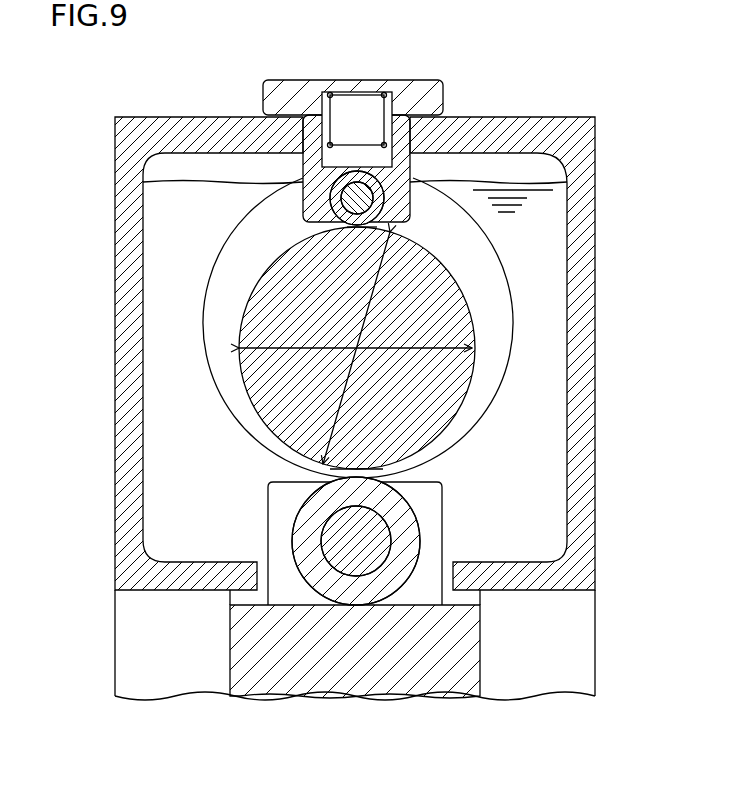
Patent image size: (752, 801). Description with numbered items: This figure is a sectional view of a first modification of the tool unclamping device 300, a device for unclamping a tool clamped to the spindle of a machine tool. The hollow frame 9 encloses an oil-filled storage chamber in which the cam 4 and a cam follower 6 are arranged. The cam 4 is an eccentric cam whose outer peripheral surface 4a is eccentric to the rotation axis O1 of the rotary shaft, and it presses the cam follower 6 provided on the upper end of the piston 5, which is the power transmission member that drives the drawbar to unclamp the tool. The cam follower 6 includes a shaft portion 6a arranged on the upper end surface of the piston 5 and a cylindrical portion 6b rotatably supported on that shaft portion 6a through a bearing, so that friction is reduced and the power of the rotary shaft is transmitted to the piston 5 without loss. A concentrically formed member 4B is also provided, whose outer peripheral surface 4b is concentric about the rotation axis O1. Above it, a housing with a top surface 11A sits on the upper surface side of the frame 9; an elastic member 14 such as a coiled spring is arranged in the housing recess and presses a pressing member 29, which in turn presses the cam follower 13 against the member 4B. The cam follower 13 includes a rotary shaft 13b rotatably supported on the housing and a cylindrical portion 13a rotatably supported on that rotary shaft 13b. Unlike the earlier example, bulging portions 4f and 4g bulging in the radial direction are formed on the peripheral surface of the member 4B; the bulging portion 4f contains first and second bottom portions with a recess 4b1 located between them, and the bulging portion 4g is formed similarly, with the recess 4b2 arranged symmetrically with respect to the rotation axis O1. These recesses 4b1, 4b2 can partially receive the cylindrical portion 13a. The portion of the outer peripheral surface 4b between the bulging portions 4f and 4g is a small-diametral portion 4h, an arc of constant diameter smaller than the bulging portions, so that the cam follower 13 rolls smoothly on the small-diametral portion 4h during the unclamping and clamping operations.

The tool unclamping device 300 is at (605, 98).
The top surface 11A is at (275, 95).
The elastic member 14 is at (392, 92).
The pressing member 29 is at (355, 150).
The cam follower 13 is at (281, 131).
The cylindrical portion 13a is at (322, 170).
The rotary shaft 13b is at (545, 181).
The frame 9 is at (587, 435).
The cam 4 is at (371, 337).
The outer peripheral surface 4a is at (515, 285).
The outer peripheral surface 4b is at (473, 355).
The recess 4b1 is at (553, 190).
The recess 4b2 is at (377, 483).
The member 4B is at (427, 380).
The bulging portion 4f is at (383, 223).
The bulging portion 4g is at (290, 448).
The small-diametral portion 4h is at (473, 315).
The rotation axis O1 is at (325, 391).
The cam follower 6 is at (477, 541).
The shaft portion 6a is at (372, 541).
The cylindrical portion 6b is at (400, 512).
The piston 5 is at (357, 667).